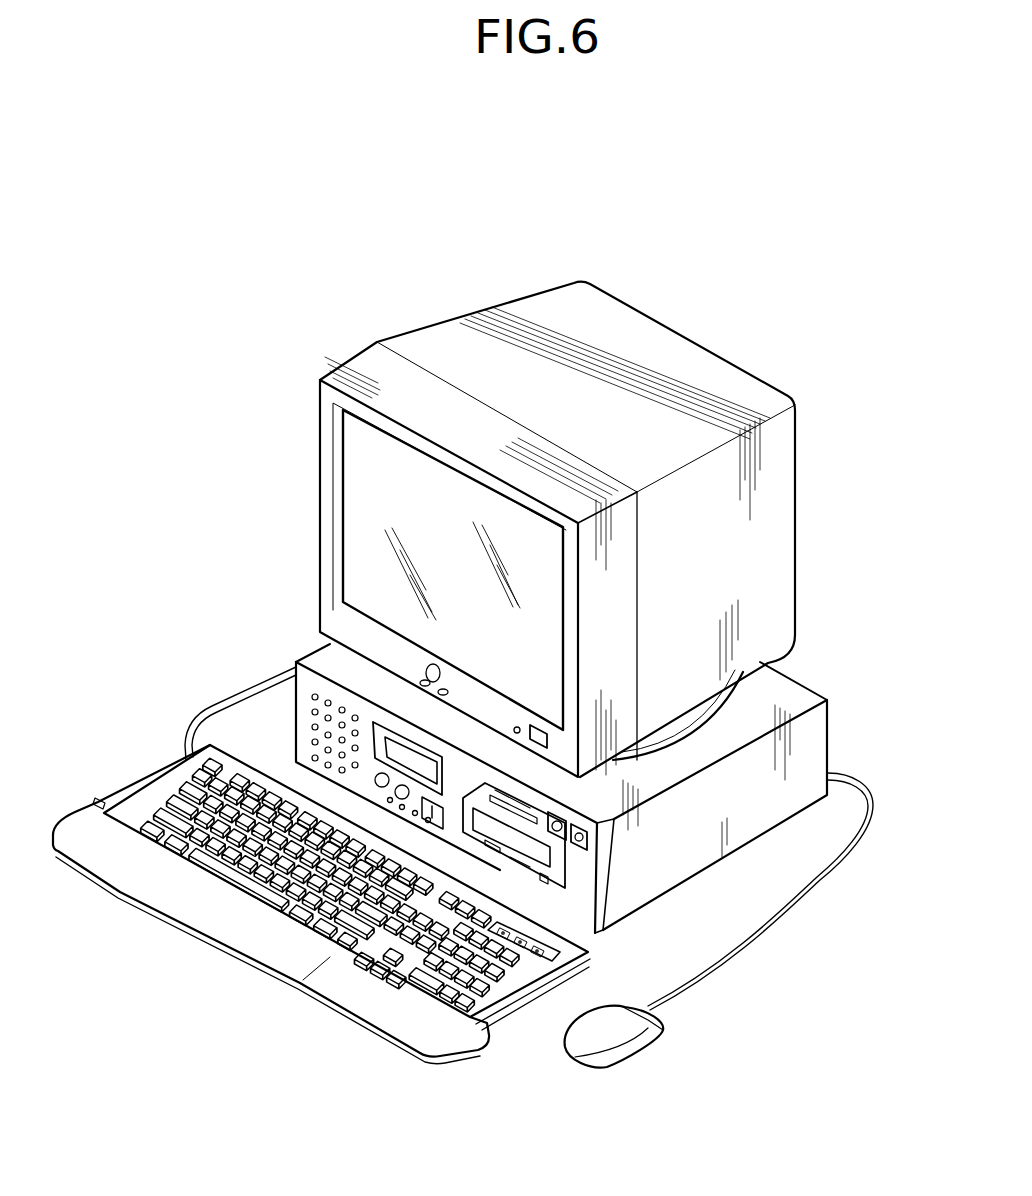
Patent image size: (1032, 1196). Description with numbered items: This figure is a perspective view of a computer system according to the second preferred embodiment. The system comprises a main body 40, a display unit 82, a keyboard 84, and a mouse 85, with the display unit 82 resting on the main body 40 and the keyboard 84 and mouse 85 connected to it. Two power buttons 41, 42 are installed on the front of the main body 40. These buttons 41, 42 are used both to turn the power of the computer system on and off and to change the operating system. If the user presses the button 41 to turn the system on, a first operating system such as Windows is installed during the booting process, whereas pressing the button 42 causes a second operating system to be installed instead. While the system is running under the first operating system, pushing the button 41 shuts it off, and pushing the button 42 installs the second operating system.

The display unit 82 is at (782, 468).
The main body 40 is at (797, 697).
The power button 41 is at (553, 835).
The power button 42 is at (590, 845).
The keyboard 84 is at (377, 1015).
The mouse 85 is at (590, 1053).